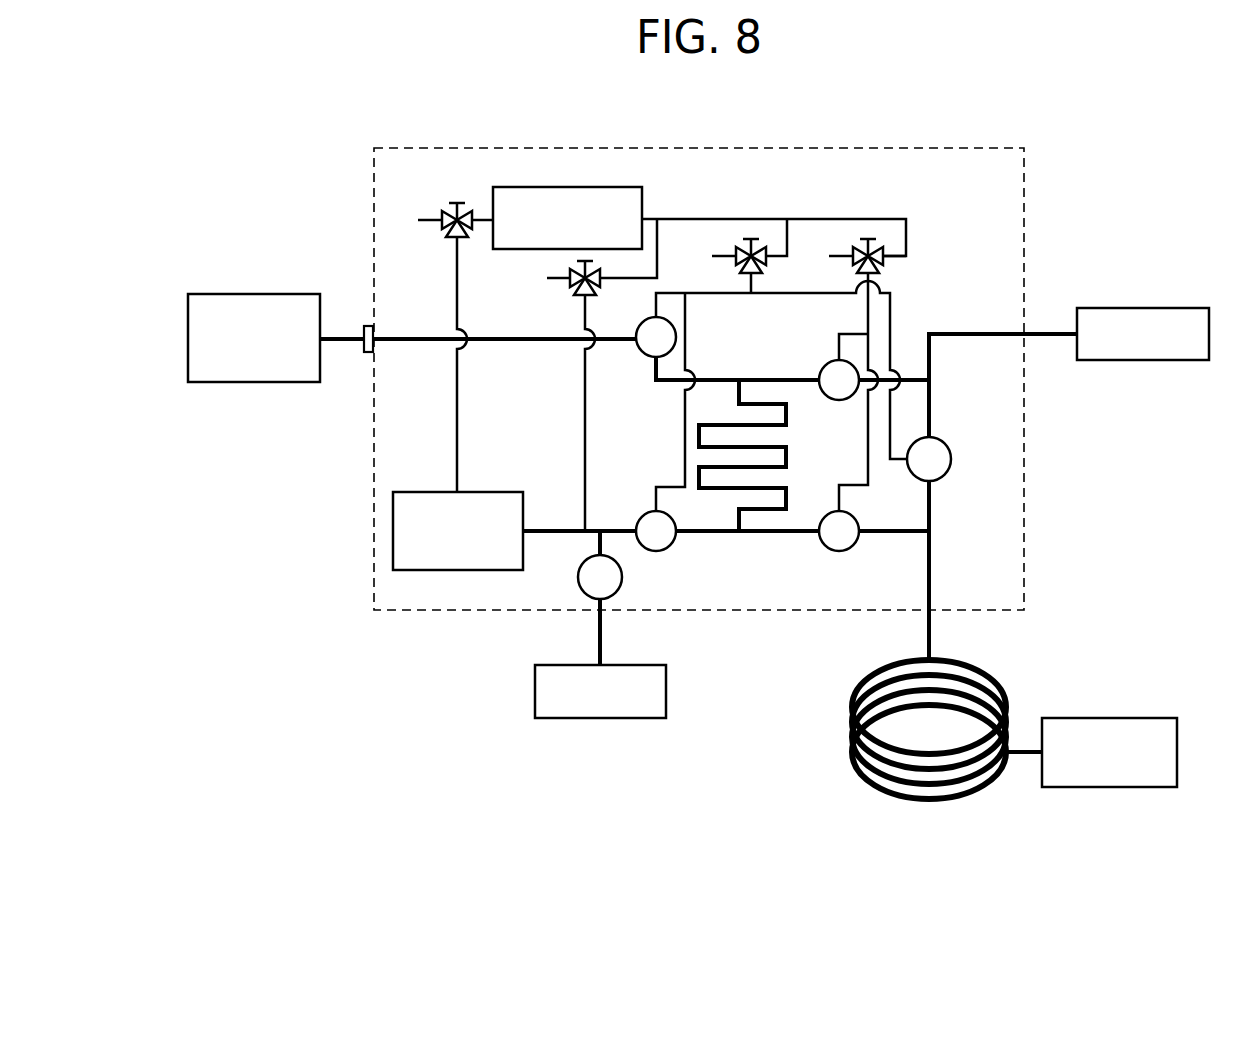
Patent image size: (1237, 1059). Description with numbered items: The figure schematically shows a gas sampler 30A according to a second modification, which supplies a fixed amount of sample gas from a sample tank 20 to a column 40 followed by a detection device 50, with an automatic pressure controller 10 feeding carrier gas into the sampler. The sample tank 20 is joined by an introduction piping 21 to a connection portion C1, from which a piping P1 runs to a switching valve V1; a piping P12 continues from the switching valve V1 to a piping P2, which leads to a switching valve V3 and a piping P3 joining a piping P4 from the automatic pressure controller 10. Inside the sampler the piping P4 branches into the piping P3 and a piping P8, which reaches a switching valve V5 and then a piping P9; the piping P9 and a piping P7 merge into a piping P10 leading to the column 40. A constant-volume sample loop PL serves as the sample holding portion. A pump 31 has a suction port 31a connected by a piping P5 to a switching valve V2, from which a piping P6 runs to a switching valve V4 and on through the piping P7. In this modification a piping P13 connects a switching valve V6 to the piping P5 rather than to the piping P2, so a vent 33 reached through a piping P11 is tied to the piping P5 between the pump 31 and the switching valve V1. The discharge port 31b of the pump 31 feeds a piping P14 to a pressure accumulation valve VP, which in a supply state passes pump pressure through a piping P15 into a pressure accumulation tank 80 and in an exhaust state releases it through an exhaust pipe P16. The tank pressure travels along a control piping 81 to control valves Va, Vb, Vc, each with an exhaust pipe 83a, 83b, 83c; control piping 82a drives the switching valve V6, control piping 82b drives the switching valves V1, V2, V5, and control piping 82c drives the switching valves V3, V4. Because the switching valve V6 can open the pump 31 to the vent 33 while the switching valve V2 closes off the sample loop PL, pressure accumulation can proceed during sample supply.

The automatic pressure controller 10 is at (1162, 307).
The sample tank 20 is at (262, 294).
The introduction piping 21 is at (348, 337).
The connection portion C1 is at (366, 356).
The gas sampler 30A is at (975, 148).
The pump 31 is at (506, 492).
The suction port 31a is at (526, 529).
The discharge port 31b is at (460, 488).
The vent 33 is at (666, 690).
The column 40 is at (984, 672).
The detection device 50 is at (1132, 718).
The pressure accumulation tank 80 is at (583, 187).
The control piping 81 is at (733, 219).
The control piping 82a is at (583, 412).
The control piping 82b is at (712, 296).
The control piping 82c is at (869, 306).
The exhaust pipe 83a is at (558, 290).
The exhaust pipe 83b is at (720, 262).
The exhaust pipe 83c is at (837, 262).
The piping P1 is at (512, 337).
The piping P2 is at (760, 378).
The piping P3 is at (909, 377).
The piping P4 is at (1051, 330).
The piping P5 is at (616, 528).
The piping P6 is at (788, 547).
The piping P7 is at (898, 547).
The piping P8 is at (931, 391).
The piping P9 is at (931, 508).
The piping P10 is at (931, 590).
The piping P11 is at (602, 638).
The piping P12 is at (651, 375).
The piping P13 is at (604, 545).
The piping P14 is at (455, 412).
The piping P15 is at (483, 216).
The exhaust pipe P16 is at (430, 218).
The sample loop PL is at (788, 417).
The switching valve V1 is at (641, 323).
The switching valve V2 is at (677, 541).
The switching valve V3 is at (822, 367).
The switching valve V4 is at (855, 516).
The switching valve V5 is at (938, 445).
The switching valve V6 is at (622, 592).
The control valve Va is at (568, 270).
The control valve Vb is at (740, 250).
The control valve Vc is at (858, 252).
The pressure accumulation valve VP is at (441, 238).